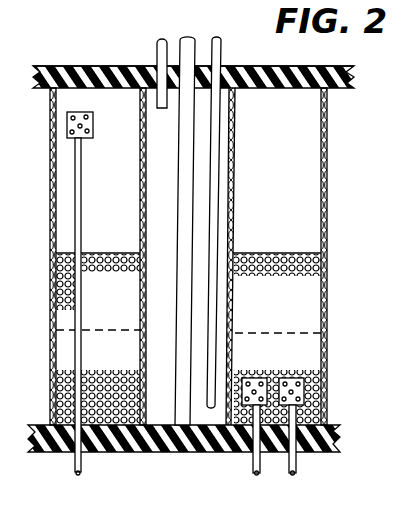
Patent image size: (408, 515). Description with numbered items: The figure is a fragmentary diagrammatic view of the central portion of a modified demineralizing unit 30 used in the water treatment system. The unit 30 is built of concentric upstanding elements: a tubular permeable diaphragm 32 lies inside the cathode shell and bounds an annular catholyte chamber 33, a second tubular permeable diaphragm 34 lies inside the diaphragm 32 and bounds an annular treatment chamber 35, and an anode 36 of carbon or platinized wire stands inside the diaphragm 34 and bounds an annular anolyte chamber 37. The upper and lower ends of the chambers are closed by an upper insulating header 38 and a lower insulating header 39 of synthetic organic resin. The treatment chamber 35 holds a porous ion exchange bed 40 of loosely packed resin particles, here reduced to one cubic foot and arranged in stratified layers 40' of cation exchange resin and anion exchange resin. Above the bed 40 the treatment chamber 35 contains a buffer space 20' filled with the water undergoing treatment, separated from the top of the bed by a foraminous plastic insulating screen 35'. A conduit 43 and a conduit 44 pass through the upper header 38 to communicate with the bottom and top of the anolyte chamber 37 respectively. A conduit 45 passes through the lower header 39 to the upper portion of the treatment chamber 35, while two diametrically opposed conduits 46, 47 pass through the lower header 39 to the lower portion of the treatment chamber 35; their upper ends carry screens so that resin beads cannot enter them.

The buffer space 20' is at (328, 256).
The demineralizing unit 30 is at (287, 66).
The tubular permeable diaphragm 32 is at (50, 180).
The catholyte chamber 33 is at (29, 236).
The tubular permeable diaphragm 34 is at (140, 180).
The treatment chamber 35 is at (277, 256).
The foraminous plastic insulating screen 35' is at (303, 251).
The anode 36 is at (193, 41).
The anolyte chamber 37 is at (168, 279).
The upper insulating header 38 is at (86, 66).
The lower insulating header 39 is at (127, 453).
The ion exchange bed 40 is at (73, 284).
The stratified layer of cation exchange resin 40' is at (302, 323).
The conduit 43 is at (219, 52).
The conduit 44 is at (160, 50).
The conduit 45 is at (74, 455).
The conduit 46 is at (253, 459).
The conduit 47 is at (297, 467).